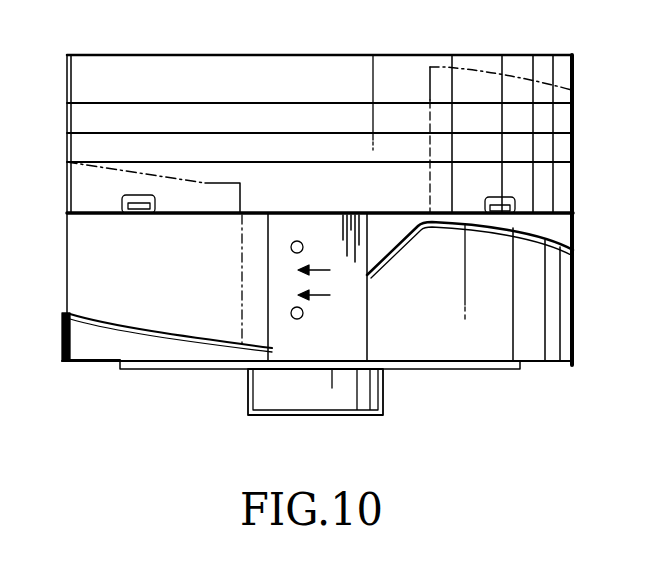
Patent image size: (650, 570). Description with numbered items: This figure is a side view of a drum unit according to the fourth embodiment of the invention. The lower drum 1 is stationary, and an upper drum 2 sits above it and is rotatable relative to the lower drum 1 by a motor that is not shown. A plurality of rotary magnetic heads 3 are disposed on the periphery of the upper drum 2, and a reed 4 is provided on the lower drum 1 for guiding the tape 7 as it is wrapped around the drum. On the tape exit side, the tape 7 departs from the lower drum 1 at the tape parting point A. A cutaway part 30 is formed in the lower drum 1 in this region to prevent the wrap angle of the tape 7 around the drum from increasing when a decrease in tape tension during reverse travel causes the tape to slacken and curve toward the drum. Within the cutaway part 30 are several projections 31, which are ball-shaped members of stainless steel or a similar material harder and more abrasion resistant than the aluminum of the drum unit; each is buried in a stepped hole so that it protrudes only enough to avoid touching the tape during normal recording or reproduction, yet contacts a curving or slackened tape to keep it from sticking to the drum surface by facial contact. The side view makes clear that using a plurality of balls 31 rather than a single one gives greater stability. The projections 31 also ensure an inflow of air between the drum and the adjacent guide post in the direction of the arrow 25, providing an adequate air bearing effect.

The lower drum 1 is at (108, 300).
The upper drum 2 is at (400, 66).
The rotary magnetic heads 3 is at (122, 197).
The reed 4 is at (166, 330).
The tape 7 is at (213, 183).
The arrow 25 is at (313, 270).
The cutaway part 30 is at (313, 348).
The projections 31 is at (296, 320).
The tape parting point A is at (236, 350).